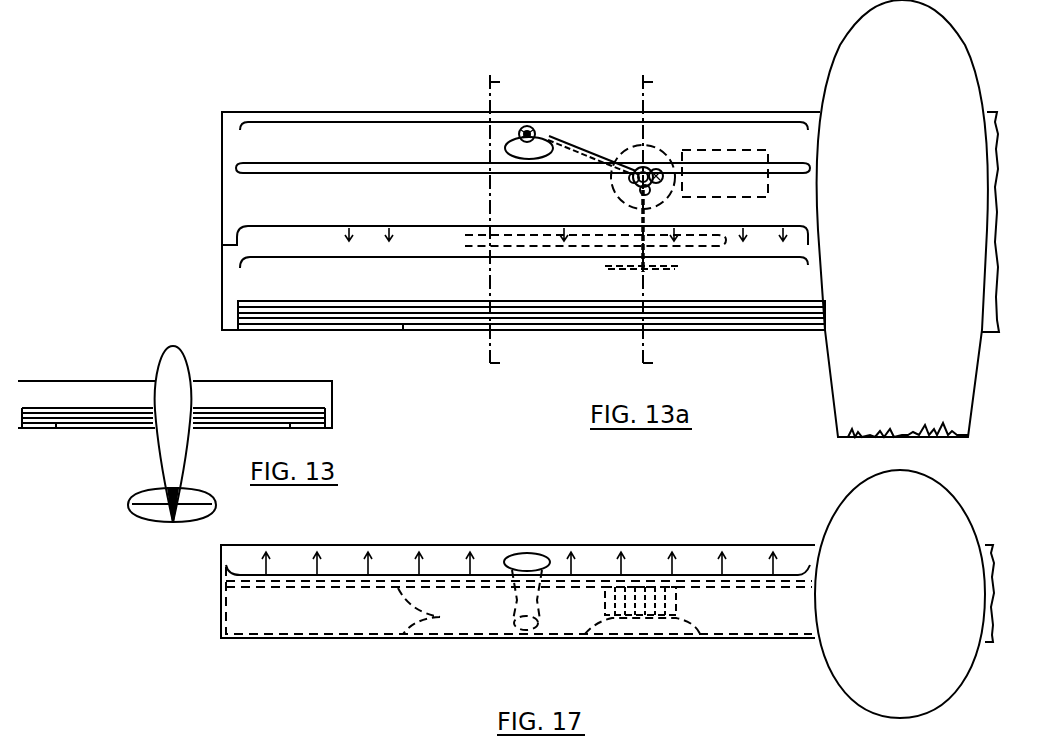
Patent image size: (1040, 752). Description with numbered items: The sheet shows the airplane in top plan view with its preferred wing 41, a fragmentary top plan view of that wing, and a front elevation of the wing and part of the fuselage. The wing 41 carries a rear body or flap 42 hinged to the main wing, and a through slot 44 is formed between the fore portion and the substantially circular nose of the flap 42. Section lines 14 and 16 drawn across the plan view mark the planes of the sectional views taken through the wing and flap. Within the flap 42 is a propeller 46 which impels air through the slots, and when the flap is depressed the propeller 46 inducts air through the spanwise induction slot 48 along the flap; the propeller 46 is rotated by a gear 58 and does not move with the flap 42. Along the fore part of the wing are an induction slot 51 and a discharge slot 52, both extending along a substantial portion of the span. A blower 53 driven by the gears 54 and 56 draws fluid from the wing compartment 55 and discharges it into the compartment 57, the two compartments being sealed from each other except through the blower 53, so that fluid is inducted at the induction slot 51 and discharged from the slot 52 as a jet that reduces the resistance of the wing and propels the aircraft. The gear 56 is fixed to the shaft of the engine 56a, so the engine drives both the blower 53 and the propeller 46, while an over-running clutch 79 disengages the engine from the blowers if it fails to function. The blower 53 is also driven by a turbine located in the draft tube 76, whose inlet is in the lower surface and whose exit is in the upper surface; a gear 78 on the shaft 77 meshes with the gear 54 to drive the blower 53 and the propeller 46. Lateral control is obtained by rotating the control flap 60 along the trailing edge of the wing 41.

In FIG. 13A, the section line 14 is at (663, 225).
In FIG. 13A, the section line 16 is at (506, 224).
In FIG. 13A, the wing 41 is at (320, 112).
In FIG. 13, the wing 41 is at (318, 394).
In FIG. 17, the wing 41 is at (385, 545).
In FIG. 13A, the flap 42 is at (235, 288).
In FIG. 13, the flap 42 is at (92, 420).
In FIG. 13A, the through slot 44 is at (325, 228).
In FIG. 13A, the propeller 46 is at (660, 268).
In FIG. 13A, the induction slot 48 is at (465, 240).
In FIG. 13A, the induction slot 51 is at (380, 170).
In FIG. 13A, the discharge slot 52 is at (415, 122).
In FIG. 17, the discharge slot 52 is at (407, 576).
In FIG. 13A, the blower 53 is at (626, 204).
In FIG. 17, the blower 53 is at (678, 606).
In FIG. 13A, the gear 54 is at (648, 172).
In FIG. 17, the wing compartment 55 is at (312, 570).
In FIG. 13A, the gear 56 is at (656, 170).
In FIG. 13A, the engine 56a is at (757, 187).
In FIG. 17, the compartment 57 is at (433, 611).
In FIG. 13A, the gear 58 is at (636, 184).
In FIG. 13A, the control flap 60 is at (347, 330).
In FIG. 13, the control flap 60 is at (28, 424).
In FIG. 13A, the draft tube 76 is at (505, 152).
In FIG. 17, the draft tube 76 is at (527, 552).
In FIG. 13A, the shaft 77 is at (582, 148).
In FIG. 13A, the gear 78 is at (636, 172).
In FIG. 13A, the over-running clutch 79 is at (658, 186).